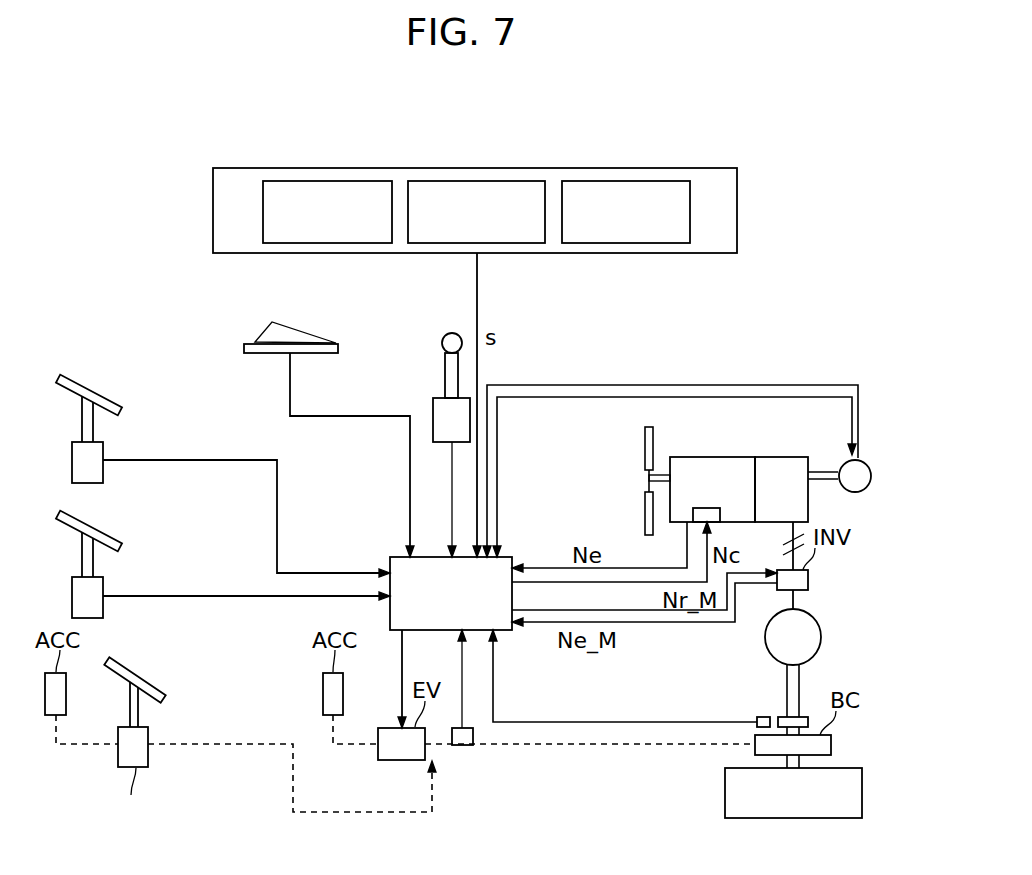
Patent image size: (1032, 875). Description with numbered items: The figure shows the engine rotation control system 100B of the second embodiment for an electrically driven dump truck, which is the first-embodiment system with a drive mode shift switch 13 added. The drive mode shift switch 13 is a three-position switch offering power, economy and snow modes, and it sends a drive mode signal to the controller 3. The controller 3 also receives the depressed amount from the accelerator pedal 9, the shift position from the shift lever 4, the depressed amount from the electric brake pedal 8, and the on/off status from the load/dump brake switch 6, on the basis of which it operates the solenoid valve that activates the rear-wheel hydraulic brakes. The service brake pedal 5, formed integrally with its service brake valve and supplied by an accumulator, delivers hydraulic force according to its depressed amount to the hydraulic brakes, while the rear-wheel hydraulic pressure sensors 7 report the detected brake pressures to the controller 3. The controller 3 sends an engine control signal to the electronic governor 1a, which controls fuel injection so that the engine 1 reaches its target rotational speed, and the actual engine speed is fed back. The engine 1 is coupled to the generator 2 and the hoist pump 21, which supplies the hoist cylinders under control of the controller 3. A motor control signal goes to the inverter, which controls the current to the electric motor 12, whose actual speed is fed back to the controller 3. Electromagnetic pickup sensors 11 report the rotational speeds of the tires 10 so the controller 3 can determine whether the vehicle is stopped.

The drive mode shift switch 13 is at (686, 168).
The engine rotation control system 100B is at (860, 285).
The load/dump brake switch 6 is at (256, 333).
The accelerator pedal 9 is at (100, 396).
The electric brake pedal 8 is at (102, 528).
The service brake pedal 5 is at (150, 680).
The shift lever 4 is at (445, 375).
The controller 3 is at (512, 556).
The engine 1 is at (700, 457).
The electronic governor 1a is at (695, 506).
The generator 2 is at (782, 457).
The hoist pump 21 is at (866, 463).
The electric motor 12 is at (822, 617).
The electromagnetic pickup sensors 11 is at (763, 715).
The tires 10 is at (795, 819).
The rear-wheel hydraulic pressure sensors 7 is at (467, 727).